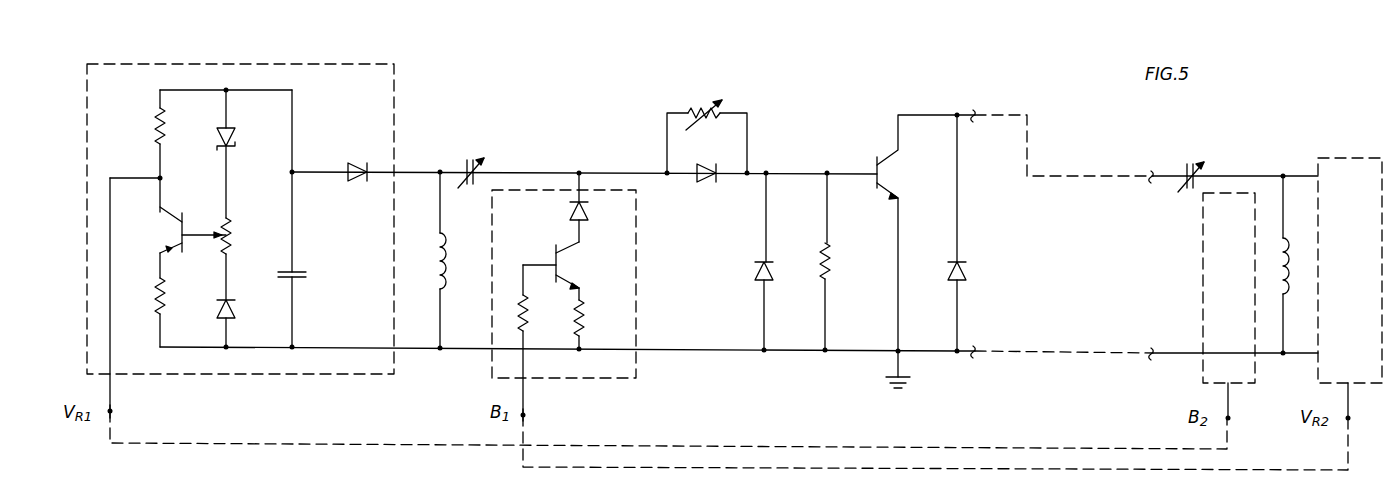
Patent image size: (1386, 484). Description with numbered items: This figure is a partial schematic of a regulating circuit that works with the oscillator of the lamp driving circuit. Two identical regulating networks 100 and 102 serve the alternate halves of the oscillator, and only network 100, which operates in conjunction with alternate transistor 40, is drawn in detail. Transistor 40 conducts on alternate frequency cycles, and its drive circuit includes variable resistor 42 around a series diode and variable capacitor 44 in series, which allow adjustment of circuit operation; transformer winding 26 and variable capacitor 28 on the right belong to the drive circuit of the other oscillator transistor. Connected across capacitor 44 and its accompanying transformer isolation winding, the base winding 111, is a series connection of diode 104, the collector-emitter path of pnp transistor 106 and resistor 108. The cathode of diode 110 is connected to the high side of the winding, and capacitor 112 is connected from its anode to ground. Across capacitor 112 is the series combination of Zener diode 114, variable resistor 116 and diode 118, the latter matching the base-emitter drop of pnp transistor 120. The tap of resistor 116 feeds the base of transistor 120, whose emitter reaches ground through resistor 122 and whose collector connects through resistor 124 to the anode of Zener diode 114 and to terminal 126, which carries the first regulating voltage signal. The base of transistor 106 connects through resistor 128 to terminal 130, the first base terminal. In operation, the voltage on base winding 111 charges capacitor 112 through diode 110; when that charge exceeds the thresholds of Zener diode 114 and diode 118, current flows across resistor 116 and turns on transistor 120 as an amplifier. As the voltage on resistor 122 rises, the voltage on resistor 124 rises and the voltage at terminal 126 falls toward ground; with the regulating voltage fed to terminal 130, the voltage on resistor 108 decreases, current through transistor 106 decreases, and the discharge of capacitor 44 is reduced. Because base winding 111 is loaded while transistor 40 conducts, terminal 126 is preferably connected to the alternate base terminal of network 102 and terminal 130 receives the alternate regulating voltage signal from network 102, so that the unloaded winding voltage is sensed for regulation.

The transformer winding 26 is at (1290, 287).
The variable capacitor 28 is at (1188, 164).
The alternate transistor 40 is at (880, 190).
The variable resistor 42 is at (705, 110).
The variable capacitor 44 is at (469, 160).
The regulating network 100 is at (396, 72).
The regulating network 102 is at (1337, 158).
The diode 104 is at (570, 211).
The pnp transistor 106 is at (562, 263).
The resistor 108 is at (585, 312).
The diode 110 is at (358, 163).
The base winding 111 is at (447, 263).
The capacitor 112 is at (302, 270).
The Zener diode 114 is at (238, 132).
The variable resistor 116 is at (232, 235).
The diode 118 is at (238, 321).
The pnp transistor 120 is at (182, 218).
The resistor 122 is at (168, 296).
The resistor 124 is at (165, 125).
The terminal 126 is at (113, 411).
The resistor 128 is at (530, 312).
The terminal 130 is at (526, 415).